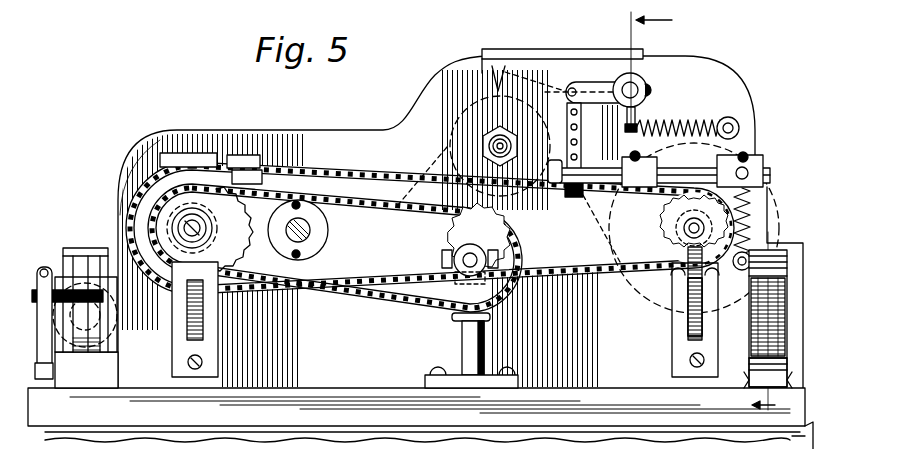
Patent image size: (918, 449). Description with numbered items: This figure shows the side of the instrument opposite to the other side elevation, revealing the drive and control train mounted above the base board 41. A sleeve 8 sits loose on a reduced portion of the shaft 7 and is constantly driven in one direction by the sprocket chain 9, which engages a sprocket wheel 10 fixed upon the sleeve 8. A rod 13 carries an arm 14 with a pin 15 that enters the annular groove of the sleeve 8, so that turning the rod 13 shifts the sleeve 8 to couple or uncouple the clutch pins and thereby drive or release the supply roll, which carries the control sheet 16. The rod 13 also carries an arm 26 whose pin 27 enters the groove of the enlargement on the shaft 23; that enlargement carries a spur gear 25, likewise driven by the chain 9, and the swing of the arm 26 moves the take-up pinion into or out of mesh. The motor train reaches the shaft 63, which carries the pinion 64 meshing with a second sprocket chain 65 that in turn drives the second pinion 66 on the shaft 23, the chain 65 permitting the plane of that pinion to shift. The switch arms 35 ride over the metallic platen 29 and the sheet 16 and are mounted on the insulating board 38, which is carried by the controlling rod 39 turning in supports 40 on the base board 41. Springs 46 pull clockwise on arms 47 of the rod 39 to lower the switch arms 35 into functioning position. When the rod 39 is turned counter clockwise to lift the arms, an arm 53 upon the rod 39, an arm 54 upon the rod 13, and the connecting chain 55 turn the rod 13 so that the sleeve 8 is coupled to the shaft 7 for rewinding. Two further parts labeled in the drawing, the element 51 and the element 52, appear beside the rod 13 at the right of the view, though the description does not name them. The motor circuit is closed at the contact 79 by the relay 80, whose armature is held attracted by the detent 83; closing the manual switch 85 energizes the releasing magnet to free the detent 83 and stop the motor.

The shaft 7 is at (676, 236).
The sleeve 8 is at (659, 69).
The sprocket chain 9 is at (772, 232).
The sprocket wheel 10 is at (678, 250).
The rod 13 is at (683, 173).
The arm 14 is at (655, 236).
The pin 15 is at (617, 238).
The control sheet 16 is at (423, 163).
The shaft 23 is at (185, 222).
The spur gear 25 is at (210, 153).
The arm 26 is at (233, 195).
The pin 27 is at (277, 294).
The platen 29 is at (452, 150).
The switch arm 35 is at (493, 84).
The insulating board 38 is at (507, 50).
The controlling rod 39 is at (633, 88).
The support 40 is at (368, 133).
The base board 41 is at (337, 393).
The spring 46 is at (698, 123).
The arm 47 is at (648, 108).
The spring 51 is at (754, 213).
The block 52 is at (748, 173).
The arm 53 is at (592, 83).
The arm 54 is at (578, 197).
The chain 55 is at (580, 140).
The shaft 63 is at (468, 258).
The pinion 64 is at (447, 238).
The sprocket chain 65 is at (338, 258).
The second pinion 66 is at (121, 208).
The contact 79 is at (43, 268).
The relay 80 is at (116, 317).
The detent 83 is at (88, 248).
The manual switch 85 is at (757, 317).